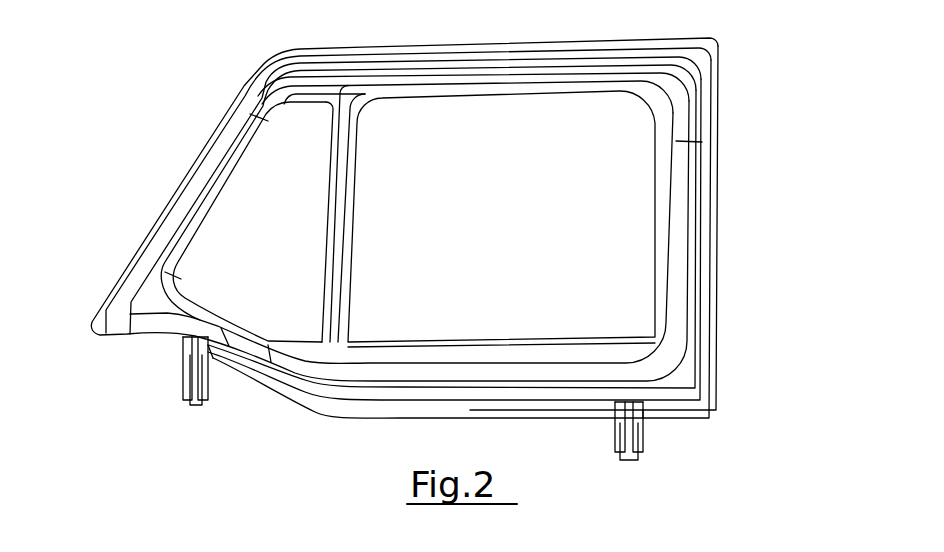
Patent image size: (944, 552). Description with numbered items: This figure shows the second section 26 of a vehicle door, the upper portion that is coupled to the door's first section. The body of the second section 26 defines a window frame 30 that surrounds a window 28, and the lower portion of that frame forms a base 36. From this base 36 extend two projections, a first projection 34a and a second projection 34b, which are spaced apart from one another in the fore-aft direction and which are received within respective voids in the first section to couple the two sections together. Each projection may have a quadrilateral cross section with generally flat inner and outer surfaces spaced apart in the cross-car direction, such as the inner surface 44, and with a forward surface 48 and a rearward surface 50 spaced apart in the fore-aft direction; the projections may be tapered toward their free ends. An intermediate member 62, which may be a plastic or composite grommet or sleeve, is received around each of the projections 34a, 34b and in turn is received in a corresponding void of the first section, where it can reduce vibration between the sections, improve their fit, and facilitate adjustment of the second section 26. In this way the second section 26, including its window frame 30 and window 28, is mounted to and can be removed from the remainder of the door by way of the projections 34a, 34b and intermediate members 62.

The second section 26 is at (461, 280).
The window 28 is at (620, 274).
The window frame 30 is at (658, 185).
The base 36 is at (393, 373).
The first projection 34a is at (185, 413).
The second projection 34b is at (645, 460).
The intermediate member 62 is at (433, 420).
The inner surface 44 is at (196, 380).
The forward surface 48 is at (185, 357).
The rearward surface 50 is at (207, 346).